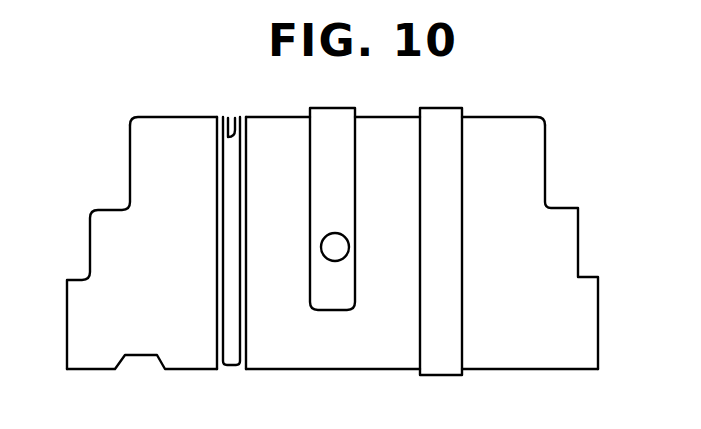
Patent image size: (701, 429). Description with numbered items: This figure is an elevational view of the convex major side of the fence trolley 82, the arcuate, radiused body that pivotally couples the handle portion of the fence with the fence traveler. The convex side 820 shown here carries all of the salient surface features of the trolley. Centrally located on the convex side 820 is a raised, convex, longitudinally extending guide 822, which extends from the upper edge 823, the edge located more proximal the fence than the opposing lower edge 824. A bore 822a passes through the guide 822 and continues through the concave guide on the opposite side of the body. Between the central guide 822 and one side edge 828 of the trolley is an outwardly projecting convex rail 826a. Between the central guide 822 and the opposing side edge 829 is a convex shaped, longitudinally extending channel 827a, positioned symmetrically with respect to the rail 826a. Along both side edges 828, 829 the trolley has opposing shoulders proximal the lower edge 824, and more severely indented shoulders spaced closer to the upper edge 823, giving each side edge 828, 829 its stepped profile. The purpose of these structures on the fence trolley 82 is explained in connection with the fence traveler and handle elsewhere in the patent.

The fence trolley 82 is at (631, 167).
The convex side 820 is at (545, 343).
The convex guide 822 is at (344, 120).
The bore 822a is at (340, 250).
The upper edge 823 is at (511, 117).
The lower edge 824 is at (497, 369).
The convex rail 826a is at (449, 186).
The convex shaped channel 827a is at (232, 120).
The side edge 828 is at (580, 234).
The opposing side edge 829 is at (90, 246).